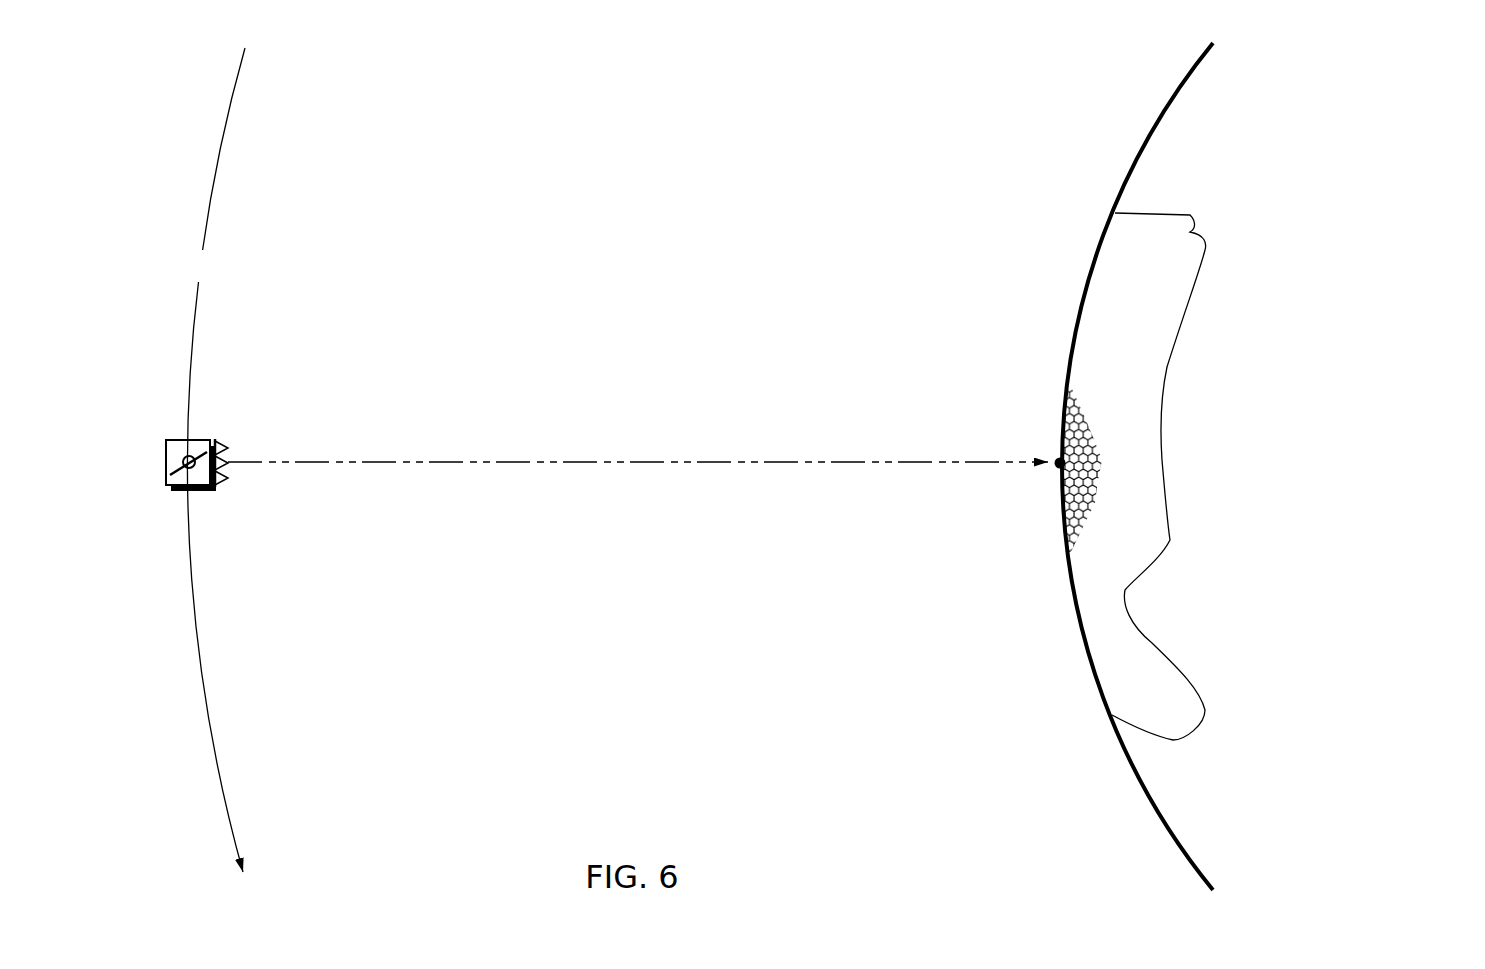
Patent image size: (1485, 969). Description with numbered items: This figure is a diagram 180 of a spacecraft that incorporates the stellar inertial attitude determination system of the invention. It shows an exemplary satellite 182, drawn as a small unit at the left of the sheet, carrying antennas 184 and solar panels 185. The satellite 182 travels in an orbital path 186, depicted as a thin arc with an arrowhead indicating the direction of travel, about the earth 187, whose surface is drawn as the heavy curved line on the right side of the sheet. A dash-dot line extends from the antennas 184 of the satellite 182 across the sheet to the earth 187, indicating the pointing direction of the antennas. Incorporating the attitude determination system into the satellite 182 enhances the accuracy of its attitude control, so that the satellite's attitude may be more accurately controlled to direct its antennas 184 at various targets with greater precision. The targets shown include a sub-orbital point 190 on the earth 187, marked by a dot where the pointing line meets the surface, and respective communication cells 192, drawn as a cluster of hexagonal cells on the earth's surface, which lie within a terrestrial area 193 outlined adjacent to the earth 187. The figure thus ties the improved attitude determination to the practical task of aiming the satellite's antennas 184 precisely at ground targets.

The diagram 180 is at (1227, 466).
The satellite 182 is at (232, 471).
The antennas 184 is at (225, 447).
The solar panels 185 is at (200, 450).
The orbital path 186 is at (216, 460).
The earth 187 is at (1153, 130).
The sub-orbital point 190 is at (1052, 473).
The communication cells 192 is at (1097, 485).
The terrestrial area 193 is at (1205, 262).